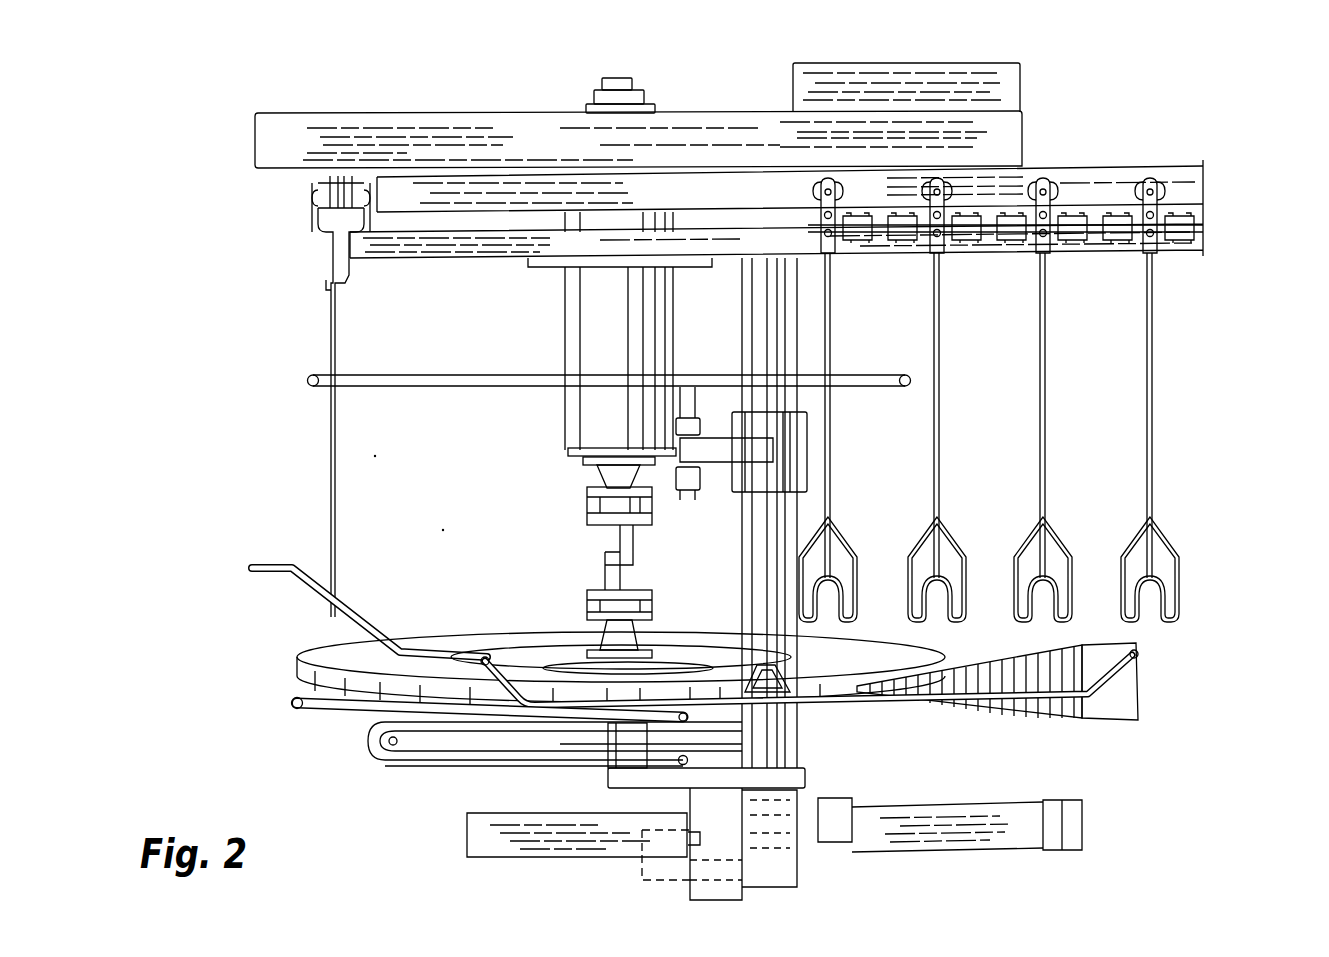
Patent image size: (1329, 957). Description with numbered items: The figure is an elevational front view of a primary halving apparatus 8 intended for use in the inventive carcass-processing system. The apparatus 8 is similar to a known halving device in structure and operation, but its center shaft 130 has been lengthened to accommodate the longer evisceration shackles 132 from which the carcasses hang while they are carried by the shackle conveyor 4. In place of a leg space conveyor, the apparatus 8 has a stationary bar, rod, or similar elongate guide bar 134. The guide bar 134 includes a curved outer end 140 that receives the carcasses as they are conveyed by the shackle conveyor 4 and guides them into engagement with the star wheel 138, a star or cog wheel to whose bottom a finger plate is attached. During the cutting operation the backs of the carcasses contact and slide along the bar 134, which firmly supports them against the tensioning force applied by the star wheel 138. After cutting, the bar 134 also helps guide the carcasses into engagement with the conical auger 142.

The primary halving apparatus 8 is at (1183, 136).
The shackle conveyor 4 is at (1203, 212).
The center shaft 130 is at (588, 313).
The evisceration shackles 132 is at (1170, 527).
The guide bar 134 is at (300, 566).
The star wheel 138 is at (365, 662).
The curved outer end 140 is at (308, 597).
The conical auger 142 is at (990, 662).